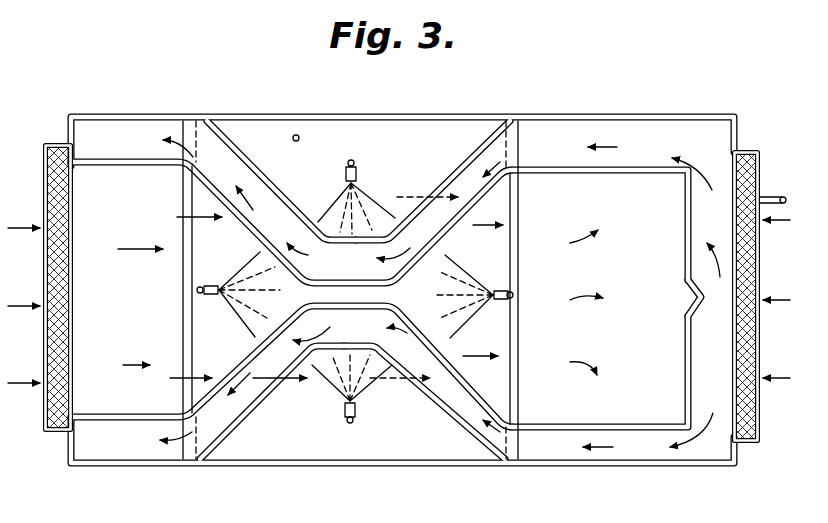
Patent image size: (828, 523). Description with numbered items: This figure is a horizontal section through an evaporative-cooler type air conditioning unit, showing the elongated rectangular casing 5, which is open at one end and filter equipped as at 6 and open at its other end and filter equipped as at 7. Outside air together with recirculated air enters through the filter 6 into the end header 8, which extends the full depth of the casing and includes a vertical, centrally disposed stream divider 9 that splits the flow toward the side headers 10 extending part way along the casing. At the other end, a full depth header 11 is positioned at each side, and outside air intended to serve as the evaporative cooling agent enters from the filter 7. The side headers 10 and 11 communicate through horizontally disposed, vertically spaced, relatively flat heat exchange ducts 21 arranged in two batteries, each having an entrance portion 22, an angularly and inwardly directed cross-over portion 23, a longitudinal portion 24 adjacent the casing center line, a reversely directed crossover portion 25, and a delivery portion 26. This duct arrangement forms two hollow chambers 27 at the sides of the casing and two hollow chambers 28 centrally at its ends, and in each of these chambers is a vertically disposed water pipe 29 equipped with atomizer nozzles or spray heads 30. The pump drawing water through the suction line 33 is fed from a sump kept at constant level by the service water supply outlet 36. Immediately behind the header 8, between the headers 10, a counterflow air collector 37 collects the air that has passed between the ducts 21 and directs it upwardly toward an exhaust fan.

The casing 5 is at (119, 114).
The filter 6 is at (762, 182).
The filter 7 is at (67, 233).
The end header 8 is at (722, 160).
The stream divider 9 is at (689, 313).
The side headers 10 is at (624, 137).
The full depth header 11 is at (129, 136).
The heat exchange ducts 21 is at (444, 185).
The entrance portion 22 is at (520, 138).
The cross-over portion 23 is at (455, 226).
The longitudinal portion 24 is at (364, 297).
The crossover portion 25 is at (280, 191).
The delivery portion 26 is at (190, 134).
The hollow chambers 27 is at (373, 137).
The hollow chambers 28 is at (165, 395).
The water pipe 29 is at (350, 161).
The atomizer nozzles 30 is at (357, 178).
The suction line 33 is at (297, 134).
The service water supply outlet 36 is at (783, 207).
The counterflow air collector 37 is at (686, 222).